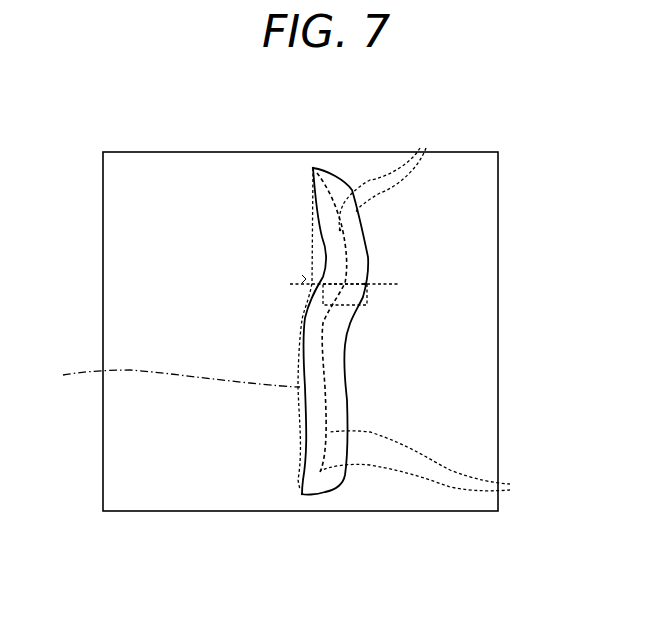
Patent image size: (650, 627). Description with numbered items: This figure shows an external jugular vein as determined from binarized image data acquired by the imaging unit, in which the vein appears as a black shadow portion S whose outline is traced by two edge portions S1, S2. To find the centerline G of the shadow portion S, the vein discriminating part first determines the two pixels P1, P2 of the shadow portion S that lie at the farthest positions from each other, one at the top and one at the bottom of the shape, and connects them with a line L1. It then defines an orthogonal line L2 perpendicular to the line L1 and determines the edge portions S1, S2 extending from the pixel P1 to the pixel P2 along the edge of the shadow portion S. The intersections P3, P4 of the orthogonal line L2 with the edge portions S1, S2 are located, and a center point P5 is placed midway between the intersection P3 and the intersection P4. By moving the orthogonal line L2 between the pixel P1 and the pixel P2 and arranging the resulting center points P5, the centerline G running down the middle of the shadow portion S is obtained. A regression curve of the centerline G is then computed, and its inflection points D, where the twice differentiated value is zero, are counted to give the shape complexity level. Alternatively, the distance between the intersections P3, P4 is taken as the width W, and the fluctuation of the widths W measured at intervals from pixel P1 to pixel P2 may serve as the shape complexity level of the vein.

The pixel P1 is at (315, 165).
The pixel P2 is at (302, 495).
The intersection P3 is at (343, 284).
The intersection P4 is at (365, 284).
The center point P5 is at (365, 284).
The inflection point D is at (427, 310).
The edge portion S1 is at (357, 218).
The edge portion S2 is at (312, 240).
The line L1 is at (310, 257).
The orthogonal line L2 is at (290, 284).
The width W is at (367, 305).
The shadow portion S is at (327, 392).
The centerline G is at (166, 379).